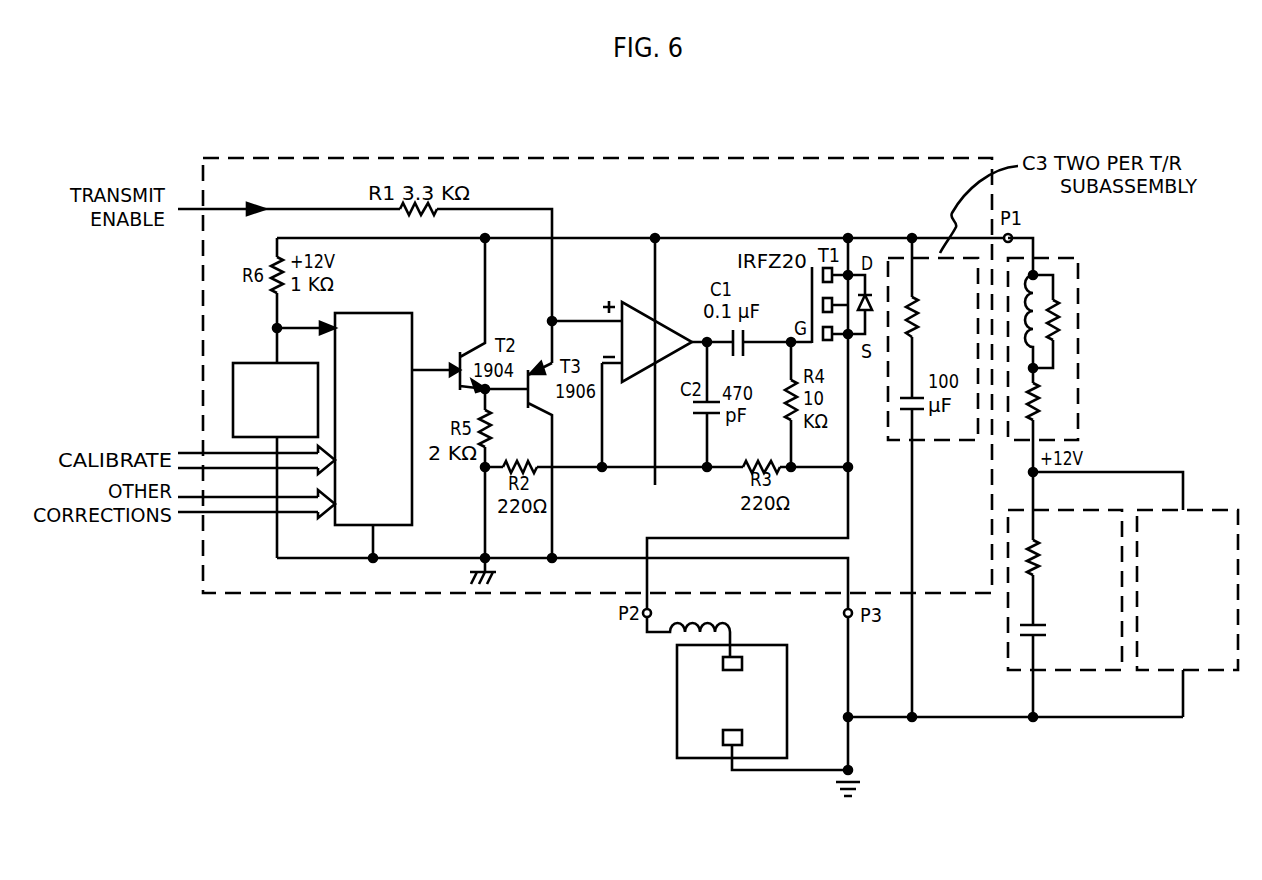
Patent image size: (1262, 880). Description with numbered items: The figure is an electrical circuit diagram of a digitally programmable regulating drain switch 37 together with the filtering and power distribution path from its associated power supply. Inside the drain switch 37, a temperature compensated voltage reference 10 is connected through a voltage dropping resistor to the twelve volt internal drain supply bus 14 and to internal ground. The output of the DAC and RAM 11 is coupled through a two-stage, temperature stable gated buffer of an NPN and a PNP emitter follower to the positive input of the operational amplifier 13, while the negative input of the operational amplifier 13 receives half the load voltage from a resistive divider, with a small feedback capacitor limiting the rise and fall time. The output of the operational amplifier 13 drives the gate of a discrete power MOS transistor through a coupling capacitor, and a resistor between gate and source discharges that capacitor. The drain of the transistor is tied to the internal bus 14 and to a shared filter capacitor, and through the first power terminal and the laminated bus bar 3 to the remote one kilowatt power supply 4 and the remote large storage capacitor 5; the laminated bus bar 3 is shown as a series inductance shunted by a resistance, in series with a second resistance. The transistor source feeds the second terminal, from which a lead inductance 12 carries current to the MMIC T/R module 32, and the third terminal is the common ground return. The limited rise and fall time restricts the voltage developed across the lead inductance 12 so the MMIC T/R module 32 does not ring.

The digitally programmable regulating drain switch 37 is at (312, 155).
The internal drain supply bus 14 is at (614, 237).
The temperature compensated voltage reference 10 is at (247, 362).
The DAC and RAM 11 is at (392, 314).
The operational amplifier 13 is at (637, 386).
The lead inductance 12 is at (670, 636).
The MMIC T/R module 32 is at (677, 748).
The laminated bus bar 3 is at (1080, 331).
The large storage capacitor 5 is at (1000, 655).
The power supply 4 is at (1155, 678).